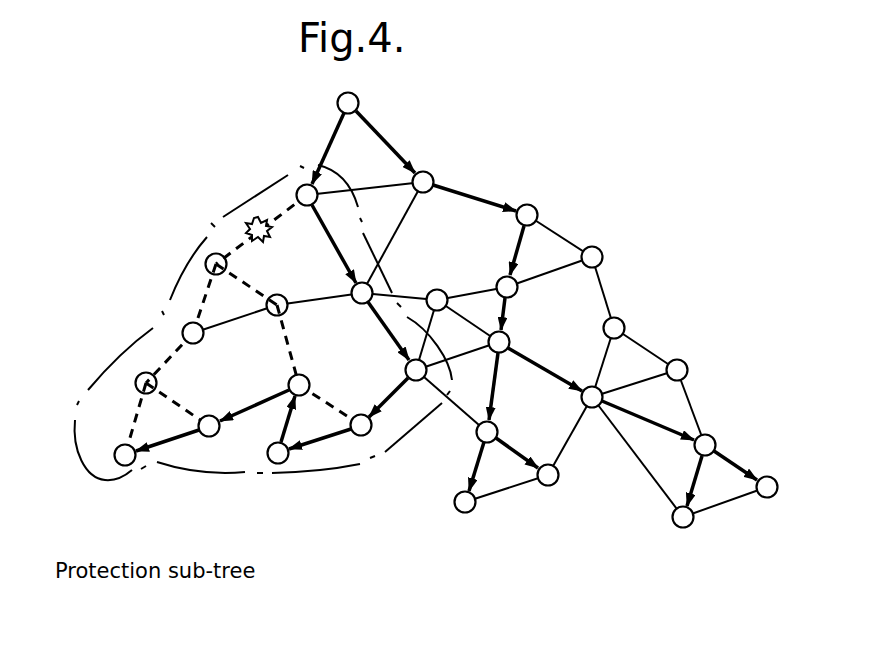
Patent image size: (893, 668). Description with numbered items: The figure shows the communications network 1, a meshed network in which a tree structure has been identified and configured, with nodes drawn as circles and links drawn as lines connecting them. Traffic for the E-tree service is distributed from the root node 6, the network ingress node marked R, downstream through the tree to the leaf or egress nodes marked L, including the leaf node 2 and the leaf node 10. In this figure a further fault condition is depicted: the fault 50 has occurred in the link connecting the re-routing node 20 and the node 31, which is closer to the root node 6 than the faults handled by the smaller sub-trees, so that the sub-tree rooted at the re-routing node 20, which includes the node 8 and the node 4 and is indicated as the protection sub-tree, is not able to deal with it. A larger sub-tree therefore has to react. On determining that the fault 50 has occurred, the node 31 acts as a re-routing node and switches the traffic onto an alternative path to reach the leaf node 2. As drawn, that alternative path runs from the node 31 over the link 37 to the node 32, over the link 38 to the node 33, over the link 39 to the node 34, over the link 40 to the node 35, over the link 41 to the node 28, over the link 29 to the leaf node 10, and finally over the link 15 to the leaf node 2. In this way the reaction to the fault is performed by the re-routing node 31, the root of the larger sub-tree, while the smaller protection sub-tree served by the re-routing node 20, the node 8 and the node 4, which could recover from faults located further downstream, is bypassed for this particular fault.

The network 1 is at (603, 198).
The leaf node 2 is at (103, 455).
The node 4 is at (148, 348).
The root node 6 is at (360, 103).
The node 8 is at (186, 326).
The leaf node 10 is at (217, 437).
The link 15 is at (173, 442).
The re-routing node 20 is at (207, 237).
The node 28 is at (307, 376).
The link 29 is at (232, 413).
The node 31 is at (294, 184).
The node 32 is at (351, 302).
The node 33 is at (421, 386).
The node 34 is at (372, 437).
The node 35 is at (285, 462).
The link 37 is at (325, 222).
The link 38 is at (388, 342).
The link 39 is at (392, 400).
The link 40 is at (322, 440).
The link 41 is at (282, 428).
The fault 50 is at (254, 216).